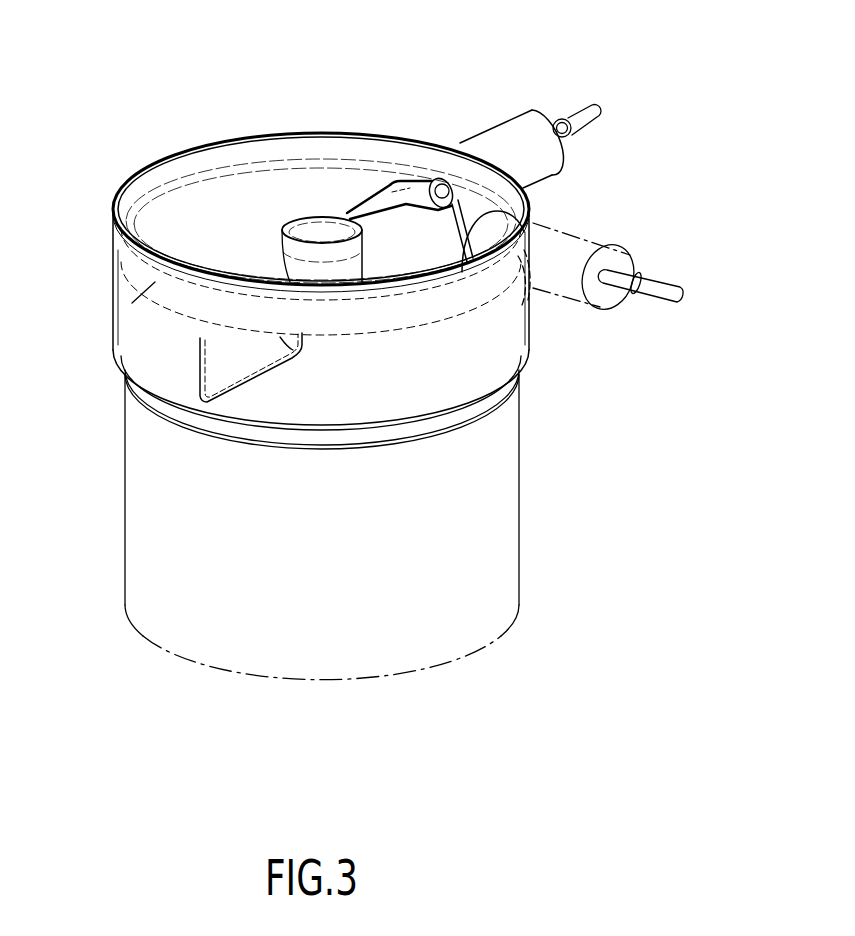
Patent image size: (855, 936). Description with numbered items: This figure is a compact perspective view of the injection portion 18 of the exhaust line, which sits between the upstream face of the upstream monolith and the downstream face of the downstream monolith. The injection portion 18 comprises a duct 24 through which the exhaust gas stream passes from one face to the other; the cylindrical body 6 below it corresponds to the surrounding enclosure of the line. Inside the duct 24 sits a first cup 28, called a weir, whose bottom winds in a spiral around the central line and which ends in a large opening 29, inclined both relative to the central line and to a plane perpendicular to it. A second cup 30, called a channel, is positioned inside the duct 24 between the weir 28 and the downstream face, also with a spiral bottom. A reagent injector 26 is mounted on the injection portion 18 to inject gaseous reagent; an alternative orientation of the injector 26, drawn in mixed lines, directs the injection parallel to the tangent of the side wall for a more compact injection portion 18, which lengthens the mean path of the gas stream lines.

The container 6 is at (563, 500).
The injection portion 18 is at (565, 213).
The duct 24 is at (522, 328).
The reagent injector 26 is at (510, 133).
The cup 28 is at (207, 197).
The opening 29 is at (412, 182).
The second cup 30 is at (130, 328).